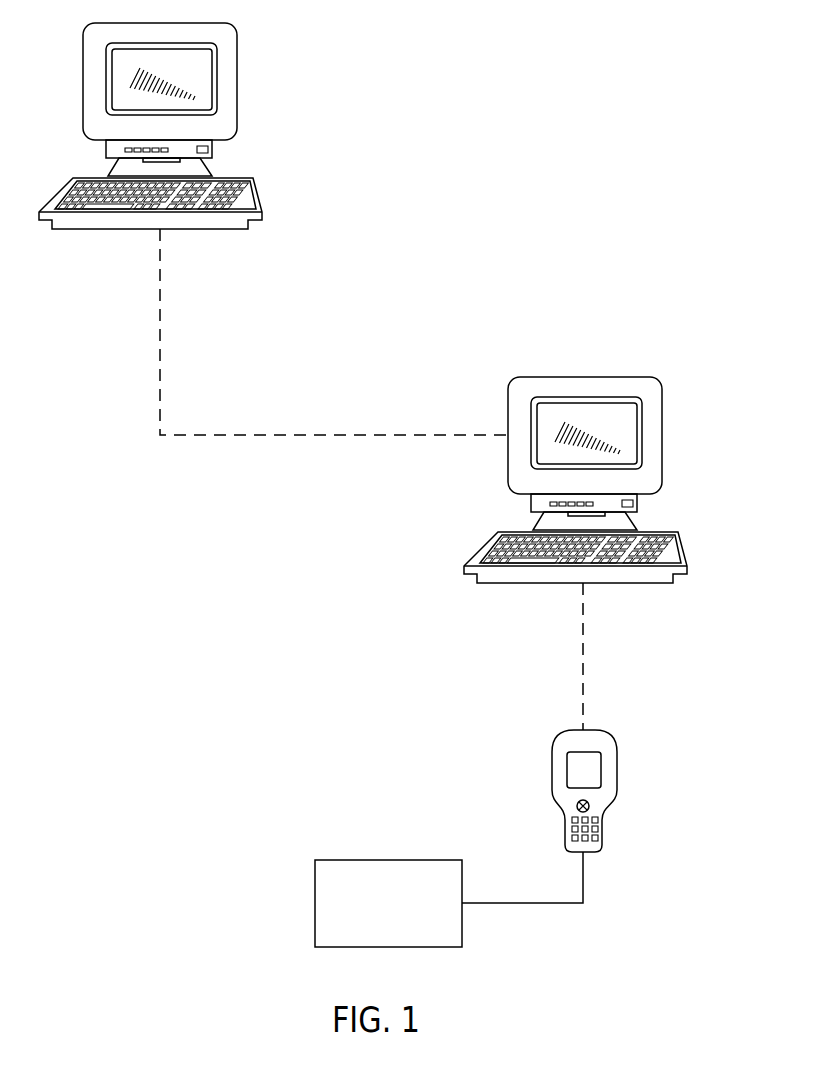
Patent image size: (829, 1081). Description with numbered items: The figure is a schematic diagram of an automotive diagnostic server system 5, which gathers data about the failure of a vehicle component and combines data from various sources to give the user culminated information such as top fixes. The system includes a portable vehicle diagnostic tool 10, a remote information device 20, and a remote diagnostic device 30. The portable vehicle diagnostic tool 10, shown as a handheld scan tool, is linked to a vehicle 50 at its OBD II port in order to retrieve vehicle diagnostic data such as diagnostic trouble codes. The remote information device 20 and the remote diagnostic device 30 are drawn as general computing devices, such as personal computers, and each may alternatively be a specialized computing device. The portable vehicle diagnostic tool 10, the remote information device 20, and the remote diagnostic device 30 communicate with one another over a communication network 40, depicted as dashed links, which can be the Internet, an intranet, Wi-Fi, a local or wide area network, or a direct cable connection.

The automotive diagnostic server system 5 is at (536, 175).
The portable vehicle diagnostic tool 10 is at (627, 815).
The remote information device 20 is at (640, 352).
The remote diagnostic device 30 is at (300, 101).
The communication network 40 is at (140, 328).
The vehicle 50 is at (388, 859).